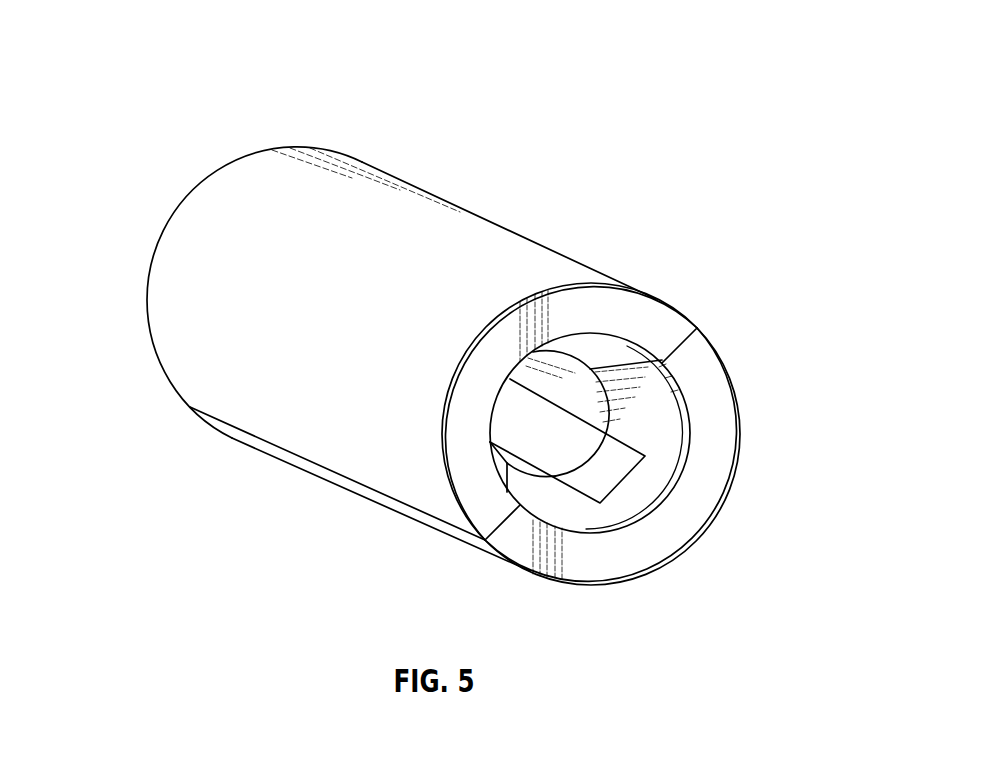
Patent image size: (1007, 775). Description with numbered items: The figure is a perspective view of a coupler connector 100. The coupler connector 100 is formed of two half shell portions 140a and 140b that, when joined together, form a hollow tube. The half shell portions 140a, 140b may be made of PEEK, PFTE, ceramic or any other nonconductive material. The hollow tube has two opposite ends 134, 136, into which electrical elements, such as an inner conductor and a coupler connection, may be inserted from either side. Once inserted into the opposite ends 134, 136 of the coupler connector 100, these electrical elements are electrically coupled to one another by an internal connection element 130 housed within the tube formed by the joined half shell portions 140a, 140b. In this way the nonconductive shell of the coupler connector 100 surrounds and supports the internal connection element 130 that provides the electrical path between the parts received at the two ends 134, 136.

The coupler connector 100 is at (745, 68).
The end of the coupler connector 134 is at (176, 186).
The half shell portion 140a is at (717, 373).
The half shell portion 140b is at (463, 265).
The internal connection element 130 is at (610, 475).
The end of the coupler connector 136 is at (577, 513).